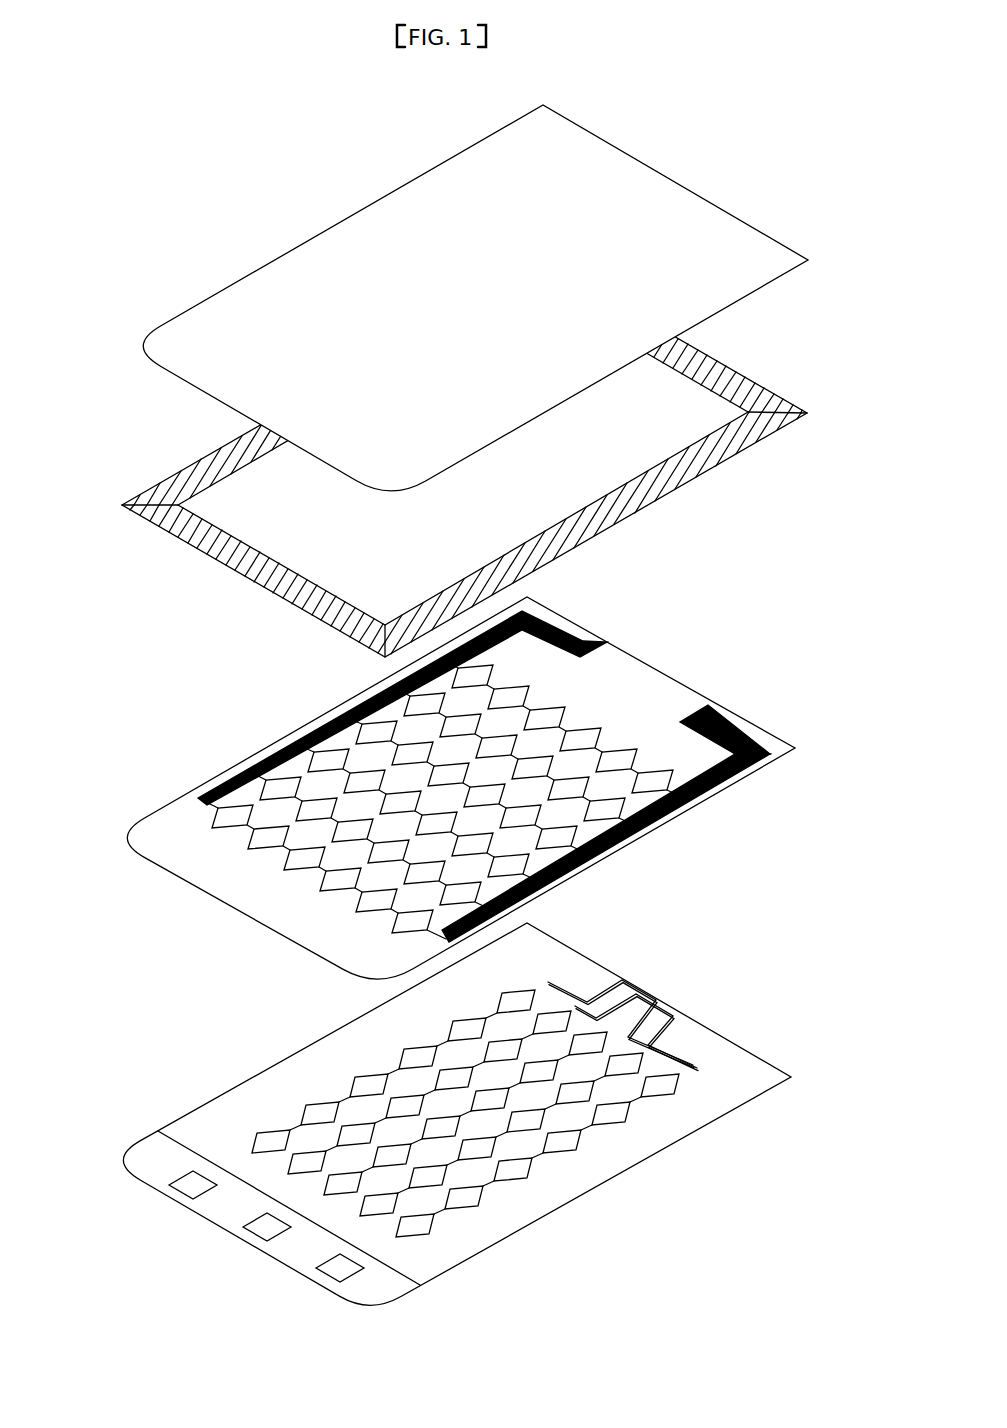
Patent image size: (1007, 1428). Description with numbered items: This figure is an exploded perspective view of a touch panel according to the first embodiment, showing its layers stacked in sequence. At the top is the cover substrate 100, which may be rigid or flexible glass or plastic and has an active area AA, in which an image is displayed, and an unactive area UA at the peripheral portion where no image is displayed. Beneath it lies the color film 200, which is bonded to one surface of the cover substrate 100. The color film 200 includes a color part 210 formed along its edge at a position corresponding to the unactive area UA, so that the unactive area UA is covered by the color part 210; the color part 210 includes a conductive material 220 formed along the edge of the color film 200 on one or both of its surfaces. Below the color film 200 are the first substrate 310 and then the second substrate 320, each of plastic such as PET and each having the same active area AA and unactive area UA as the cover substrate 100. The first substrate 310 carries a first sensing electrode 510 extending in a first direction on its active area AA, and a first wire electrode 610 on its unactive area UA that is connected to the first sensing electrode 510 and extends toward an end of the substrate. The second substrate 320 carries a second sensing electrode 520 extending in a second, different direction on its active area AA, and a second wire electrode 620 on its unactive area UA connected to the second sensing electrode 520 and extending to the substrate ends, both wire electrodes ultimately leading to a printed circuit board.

The cover substrate 100 is at (222, 291).
The color film 200 is at (185, 462).
The color part 210 is at (723, 372).
The conductive material 220 is at (618, 467).
The first substrate 310 is at (330, 711).
The second substrate 320 is at (245, 1088).
The first sensing electrode 510 is at (660, 778).
The second sensing electrode 520 is at (663, 1087).
The first wire electrode 610 is at (750, 770).
The second wire electrode 620 is at (662, 1018).
The active area AA is at (597, 830).
The unactive area UA is at (287, 913).